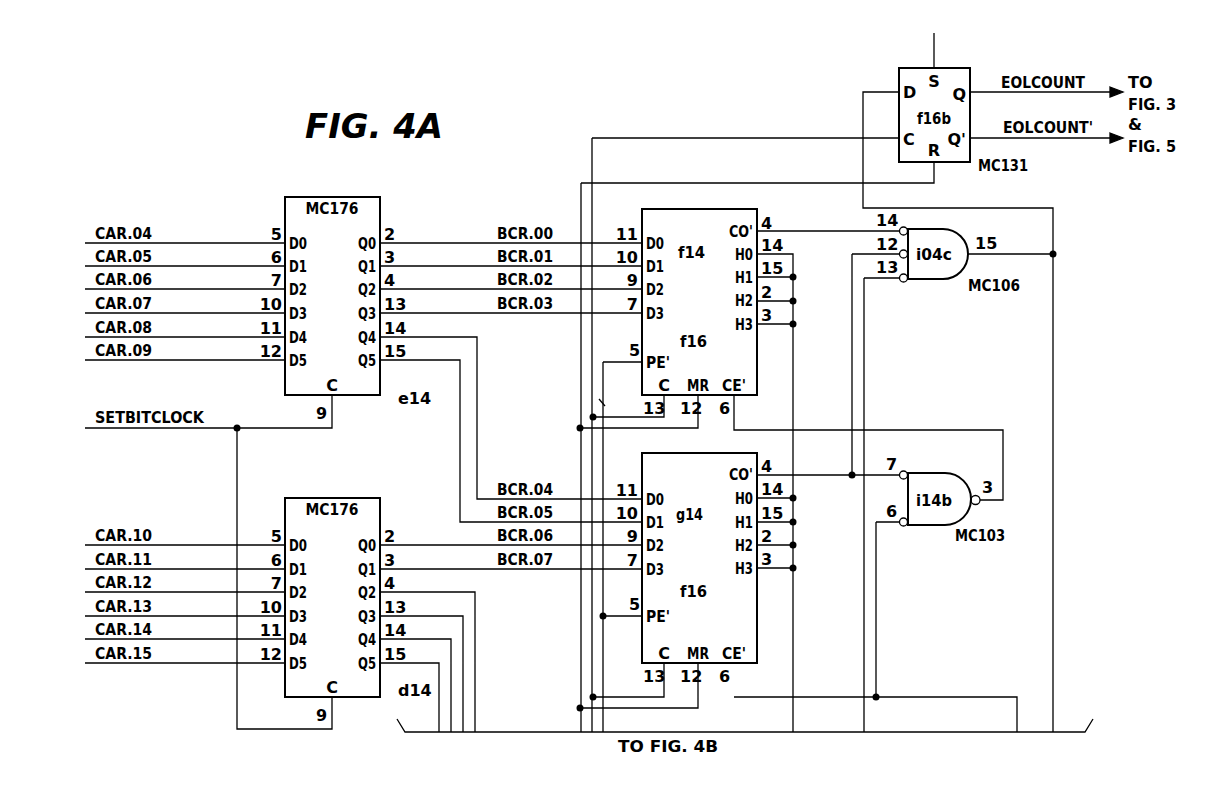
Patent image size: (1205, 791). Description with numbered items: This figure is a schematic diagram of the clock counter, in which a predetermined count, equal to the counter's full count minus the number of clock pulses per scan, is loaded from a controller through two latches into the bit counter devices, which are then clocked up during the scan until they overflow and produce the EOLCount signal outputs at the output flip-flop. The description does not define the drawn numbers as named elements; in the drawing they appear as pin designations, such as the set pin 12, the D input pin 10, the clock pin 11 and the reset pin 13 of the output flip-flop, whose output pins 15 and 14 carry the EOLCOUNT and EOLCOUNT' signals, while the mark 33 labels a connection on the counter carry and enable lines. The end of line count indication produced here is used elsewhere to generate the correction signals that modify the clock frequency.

The carry/enable interconnection line 33 is at (758, 211).
The set input of flip-flop f16b 12 is at (921, 50).
The D input line of flip-flop f16b 10 is at (960, 402).
The clock input line of flip-flop f16b 11 is at (746, 128).
The reset input line of flip-flop f16b 13 is at (757, 173).
The EOLCOUNT output line 15 is at (1046, 85).
The EOLCOUNT' output line 14 is at (1046, 130).